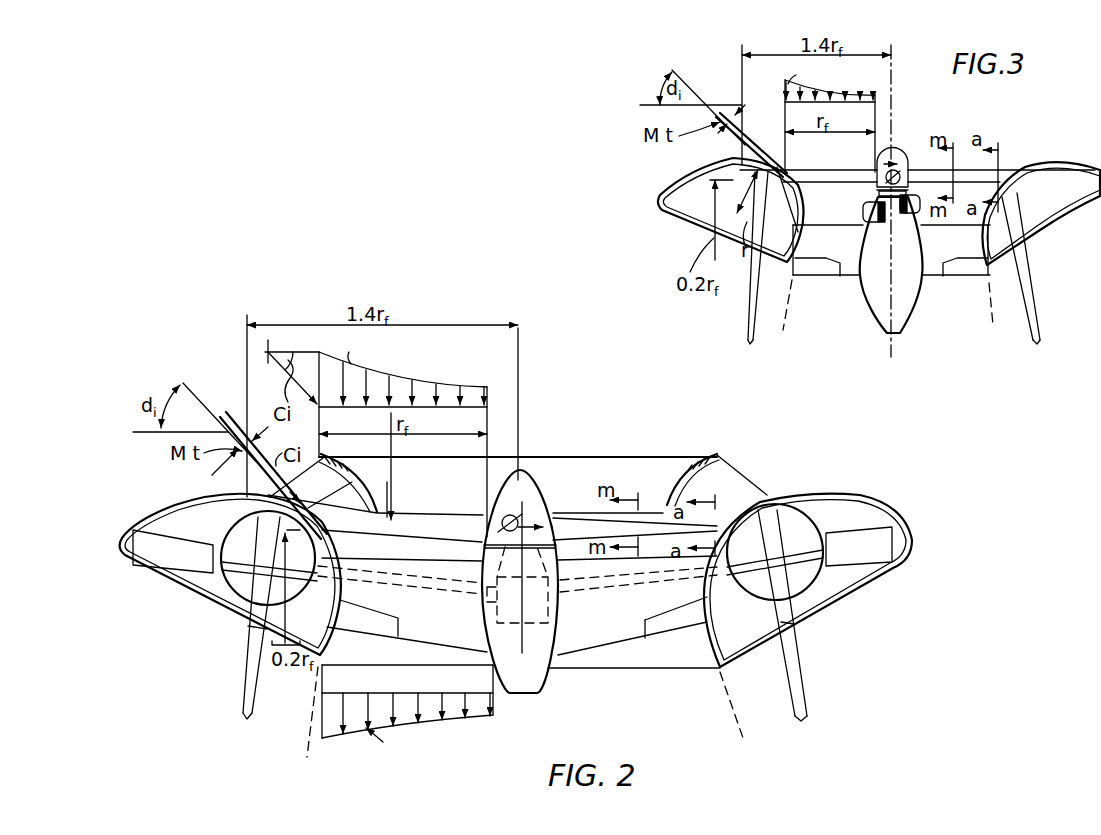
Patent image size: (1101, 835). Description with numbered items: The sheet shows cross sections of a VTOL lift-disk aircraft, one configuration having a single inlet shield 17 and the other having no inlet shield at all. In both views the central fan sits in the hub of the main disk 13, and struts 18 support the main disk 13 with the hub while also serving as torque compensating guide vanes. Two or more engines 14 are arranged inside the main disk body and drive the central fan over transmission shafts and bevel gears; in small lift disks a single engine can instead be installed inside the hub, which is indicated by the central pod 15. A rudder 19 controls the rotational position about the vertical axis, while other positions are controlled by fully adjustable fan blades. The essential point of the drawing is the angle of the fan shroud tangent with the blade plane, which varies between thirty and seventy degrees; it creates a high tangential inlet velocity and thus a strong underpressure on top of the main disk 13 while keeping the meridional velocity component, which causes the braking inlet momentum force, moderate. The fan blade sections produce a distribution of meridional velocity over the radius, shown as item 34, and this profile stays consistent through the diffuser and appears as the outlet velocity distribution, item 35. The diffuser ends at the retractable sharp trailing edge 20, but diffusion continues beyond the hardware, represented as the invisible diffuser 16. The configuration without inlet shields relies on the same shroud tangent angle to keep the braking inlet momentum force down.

In FIG. 2, the main disk 13 is at (847, 512).
In FIG. 2, the engines 14 is at (904, 527).
In FIG. 2, the central pod / nacelle 15 is at (573, 527).
In FIG. 2, the invisible diffuser 16 is at (330, 600).
In FIG. 3, the invisible diffuser 16 is at (982, 239).
In FIG. 2, the inlet shield 17 is at (344, 464).
In FIG. 2, the struts 18 is at (628, 623).
In FIG. 2, the rudder 19 is at (685, 620).
In FIG. 2, the sharp trailing edge 20 is at (790, 685).
In FIG. 2, the meridional velocity distribution 34 is at (418, 380).
In FIG. 3, the meridional velocity distribution 34 is at (838, 87).
In FIG. 2, the outlet velocity distribution 35 is at (338, 738).